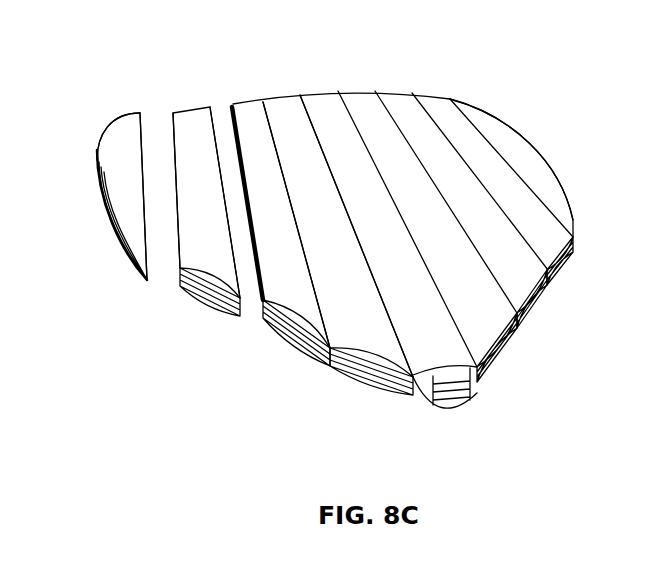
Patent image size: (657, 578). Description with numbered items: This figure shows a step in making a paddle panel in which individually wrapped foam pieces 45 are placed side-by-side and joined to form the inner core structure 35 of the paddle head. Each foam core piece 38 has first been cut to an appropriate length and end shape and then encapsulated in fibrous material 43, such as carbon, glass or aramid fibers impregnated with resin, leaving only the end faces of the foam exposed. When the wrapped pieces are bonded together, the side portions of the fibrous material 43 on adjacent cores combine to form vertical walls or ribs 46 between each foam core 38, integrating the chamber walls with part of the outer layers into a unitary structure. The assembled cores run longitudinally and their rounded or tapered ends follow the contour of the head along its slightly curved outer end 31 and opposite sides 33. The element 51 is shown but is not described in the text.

The outer end 31 is at (358, 93).
The opposite sides 33 is at (97, 157).
The inner core structure 35 is at (497, 244).
The foam core pieces 38 is at (135, 193).
The fibrous material 43 is at (297, 344).
The individually wrapped foam pieces 45 is at (251, 147).
The vertical walls or ribs 46 is at (368, 266).
The middle segment 51 is at (210, 299).